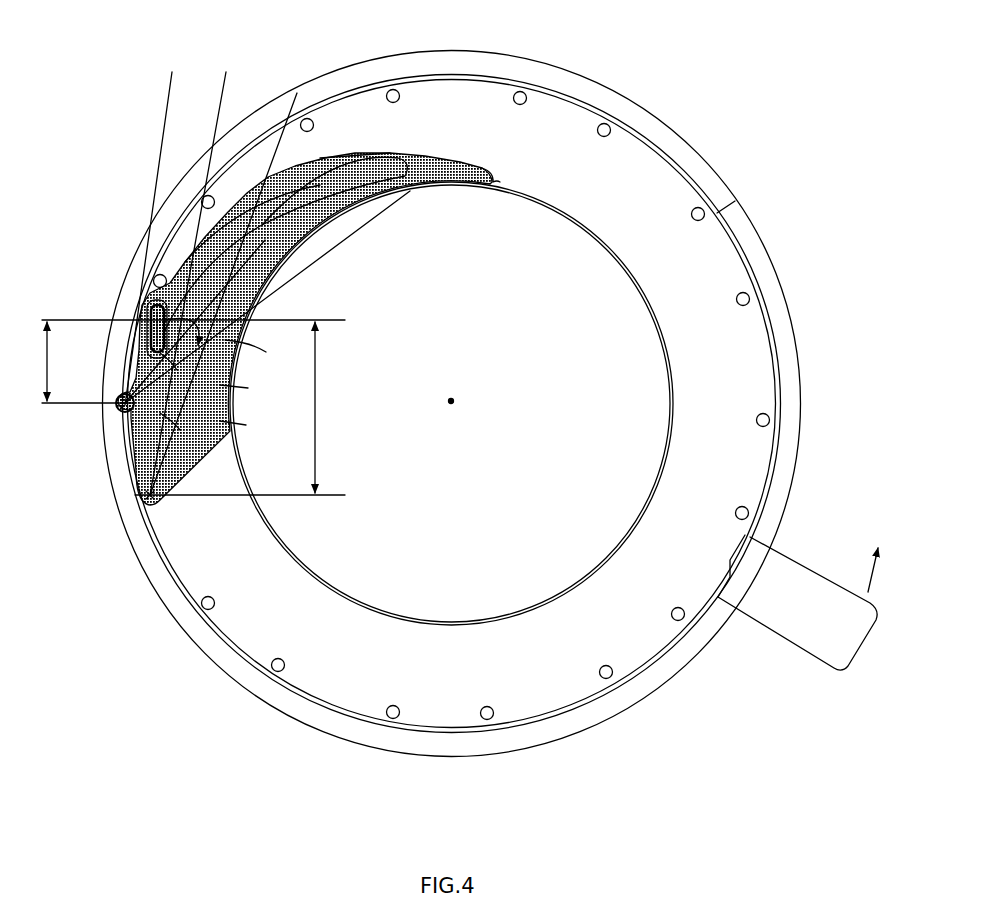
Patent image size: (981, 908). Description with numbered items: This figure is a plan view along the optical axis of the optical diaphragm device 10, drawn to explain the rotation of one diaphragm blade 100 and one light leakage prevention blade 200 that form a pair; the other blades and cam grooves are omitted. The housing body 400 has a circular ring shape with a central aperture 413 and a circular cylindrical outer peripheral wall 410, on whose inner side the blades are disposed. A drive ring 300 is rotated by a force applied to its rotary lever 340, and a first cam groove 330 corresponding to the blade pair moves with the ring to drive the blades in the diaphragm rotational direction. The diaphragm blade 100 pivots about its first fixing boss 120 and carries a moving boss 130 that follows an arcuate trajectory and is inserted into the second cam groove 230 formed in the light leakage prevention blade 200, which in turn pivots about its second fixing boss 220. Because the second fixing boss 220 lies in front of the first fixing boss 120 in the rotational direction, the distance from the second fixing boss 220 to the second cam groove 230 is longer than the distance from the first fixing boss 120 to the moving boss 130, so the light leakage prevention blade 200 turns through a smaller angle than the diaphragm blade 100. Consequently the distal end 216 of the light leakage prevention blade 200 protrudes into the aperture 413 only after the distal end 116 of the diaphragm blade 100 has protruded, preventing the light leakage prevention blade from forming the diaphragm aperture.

The optical diaphragm device 10 is at (828, 41).
The diaphragm blade 100 is at (312, 261).
The distal end of the first blade portion 116 is at (497, 183).
The first fixing boss 120 is at (118, 405).
The moving boss 130 is at (147, 310).
The light leakage prevention blade 200 is at (298, 282).
The distal end of the second blade portion 216 is at (322, 233).
The second fixing boss 220 is at (140, 492).
The second cam groove 230 is at (152, 332).
The drive ring 300 is at (790, 454).
The first cam groove 330 is at (353, 150).
The rotary lever 340 is at (820, 636).
The housing body 400 is at (283, 70).
The outer peripheral wall 410 is at (651, 125).
The aperture 413 is at (598, 376).